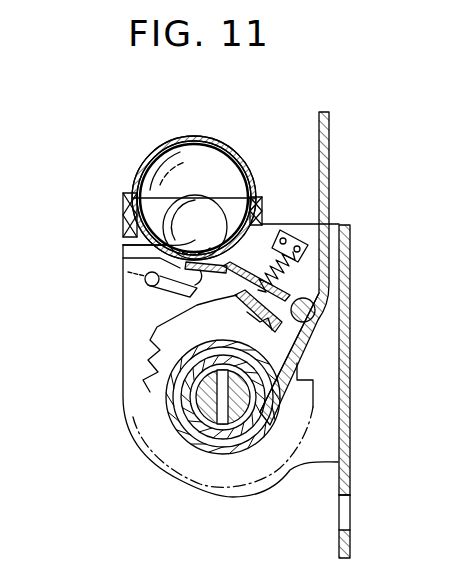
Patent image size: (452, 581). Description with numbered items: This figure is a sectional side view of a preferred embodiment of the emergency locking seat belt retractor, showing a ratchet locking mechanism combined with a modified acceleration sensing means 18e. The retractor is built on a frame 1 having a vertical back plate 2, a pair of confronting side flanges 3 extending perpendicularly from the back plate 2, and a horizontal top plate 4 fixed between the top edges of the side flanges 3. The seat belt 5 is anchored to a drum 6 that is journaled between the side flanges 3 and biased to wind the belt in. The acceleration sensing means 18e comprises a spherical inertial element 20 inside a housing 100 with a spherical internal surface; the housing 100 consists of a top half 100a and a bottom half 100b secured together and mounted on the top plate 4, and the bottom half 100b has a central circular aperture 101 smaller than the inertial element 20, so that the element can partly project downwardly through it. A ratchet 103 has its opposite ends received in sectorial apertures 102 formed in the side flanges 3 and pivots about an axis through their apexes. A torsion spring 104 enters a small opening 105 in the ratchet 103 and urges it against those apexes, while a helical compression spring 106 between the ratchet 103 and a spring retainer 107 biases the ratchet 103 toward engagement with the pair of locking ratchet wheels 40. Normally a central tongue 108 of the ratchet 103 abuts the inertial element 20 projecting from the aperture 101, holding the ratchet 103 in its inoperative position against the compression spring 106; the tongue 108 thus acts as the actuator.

The frame 1 is at (352, 234).
The back plate 2 is at (345, 478).
The side flanges 3 is at (327, 430).
The top plate 4 is at (128, 218).
The seat belt 5 is at (330, 143).
The drum 6 is at (200, 408).
The acceleration sensing means 18e is at (170, 153).
The spherical inertial element 20 is at (200, 215).
The locking ratchet wheels 40 is at (137, 387).
The housing 100 is at (138, 178).
The top half of housing 100a is at (226, 118).
The bottom half of housing 100b is at (258, 225).
The circular aperture 101 is at (123, 245).
The sectorial apertures 102 is at (300, 340).
The ratchet 103 is at (258, 300).
The torsion spring 104 is at (175, 288).
The small opening 105 is at (190, 300).
The helical compression spring 106 is at (303, 283).
The spring retainer 107 is at (295, 230).
The tongue 108 is at (145, 275).